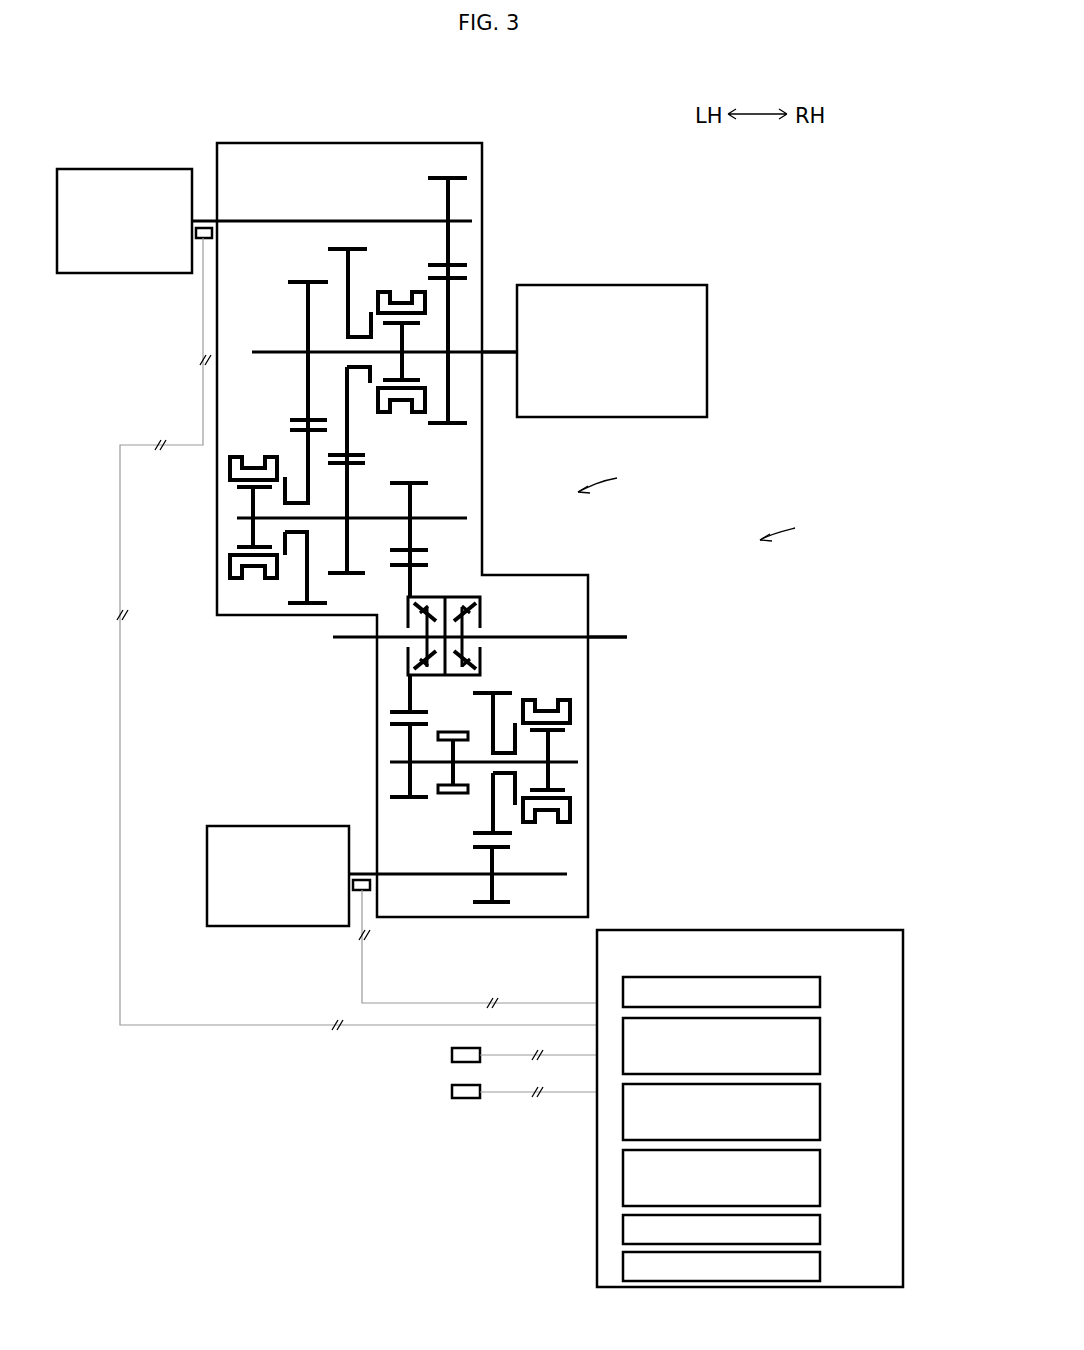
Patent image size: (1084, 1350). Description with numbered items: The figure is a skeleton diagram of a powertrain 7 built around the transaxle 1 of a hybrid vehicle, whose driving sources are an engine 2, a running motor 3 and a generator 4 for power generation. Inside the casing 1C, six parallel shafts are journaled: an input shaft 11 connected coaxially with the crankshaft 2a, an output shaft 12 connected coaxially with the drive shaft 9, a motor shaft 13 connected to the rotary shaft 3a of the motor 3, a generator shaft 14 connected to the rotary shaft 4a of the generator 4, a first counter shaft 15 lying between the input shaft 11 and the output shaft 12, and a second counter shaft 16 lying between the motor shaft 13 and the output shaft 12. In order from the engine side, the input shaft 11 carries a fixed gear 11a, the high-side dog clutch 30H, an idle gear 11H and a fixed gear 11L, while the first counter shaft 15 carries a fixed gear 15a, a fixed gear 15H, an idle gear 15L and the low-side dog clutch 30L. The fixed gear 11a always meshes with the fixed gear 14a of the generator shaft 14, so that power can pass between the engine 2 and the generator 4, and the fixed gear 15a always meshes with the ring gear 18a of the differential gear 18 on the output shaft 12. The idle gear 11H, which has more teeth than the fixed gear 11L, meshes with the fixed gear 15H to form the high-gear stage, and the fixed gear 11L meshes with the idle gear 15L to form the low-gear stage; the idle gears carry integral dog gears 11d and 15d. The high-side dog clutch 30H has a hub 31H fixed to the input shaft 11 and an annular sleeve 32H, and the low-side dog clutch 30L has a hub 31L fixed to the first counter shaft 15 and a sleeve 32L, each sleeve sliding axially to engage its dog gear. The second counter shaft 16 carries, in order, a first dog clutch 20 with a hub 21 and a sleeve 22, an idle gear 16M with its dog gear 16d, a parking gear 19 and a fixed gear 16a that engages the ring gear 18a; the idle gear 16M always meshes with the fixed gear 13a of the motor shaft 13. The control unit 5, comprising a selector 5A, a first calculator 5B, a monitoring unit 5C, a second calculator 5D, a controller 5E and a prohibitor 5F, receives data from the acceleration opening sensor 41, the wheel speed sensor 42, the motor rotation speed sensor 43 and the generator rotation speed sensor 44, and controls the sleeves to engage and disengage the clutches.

The transaxle 1 is at (608, 478).
The casing 1C is at (238, 143).
The engine 2 is at (707, 345).
The crankshaft 2a is at (492, 354).
The motor 3 is at (245, 826).
The rotary shaft of the motor 3a is at (357, 870).
The generator 4 is at (103, 169).
The rotary shaft of the generator 4a is at (200, 220).
The control unit 5 is at (771, 1108).
The selector 5A is at (820, 992).
The first calculator 5B is at (820, 1046).
The monitoring unit 5C is at (820, 1109).
The second calculator 5D is at (820, 1179).
The controller 5E is at (820, 1231).
The prohibitor 5F is at (820, 1267).
The powertrain 7 is at (788, 527).
The drive shaft 9 is at (611, 637).
The input shaft 11 is at (257, 352).
The fixed gear 11a is at (466, 405).
The dog gear 11d is at (363, 386).
The idle gear 11H is at (346, 266).
The fixed gear 11L is at (307, 383).
The output shaft 12 is at (559, 637).
The motor shaft 13 is at (432, 876).
The fixed gear 13a is at (498, 890).
The generator shaft 14 is at (297, 221).
The fixed gear 14a is at (450, 200).
The first counter shaft 15 is at (455, 518).
The fixed gear 15a is at (413, 495).
The dog gear 15d is at (287, 554).
The fixed gear 15H is at (347, 556).
The idle gear 15L is at (307, 447).
The second counter shaft 16 is at (568, 762).
The fixed gear 16a is at (407, 742).
The dog gear 16d is at (515, 730).
The idle gear 16M is at (488, 812).
The differential gear 18 is at (498, 593).
The ring gear 18a is at (407, 696).
The parking gear 19 is at (447, 792).
The first dog clutch 20 is at (585, 802).
The hub 21 is at (548, 768).
The sleeve 22 is at (571, 843).
The high-side dog clutch 30H is at (470, 279).
The low-side dog clutch 30L is at (215, 564).
The hub 31H is at (405, 340).
The hub 31L is at (237, 533).
The sleeve 32H is at (418, 408).
The sleeve 32L is at (245, 587).
The acceleration opening sensor 41 is at (450, 1055).
The wheel speed sensor 42 is at (450, 1091).
The motor rotation speed sensor 43 is at (360, 893).
The generator rotation speed sensor 44 is at (200, 240).